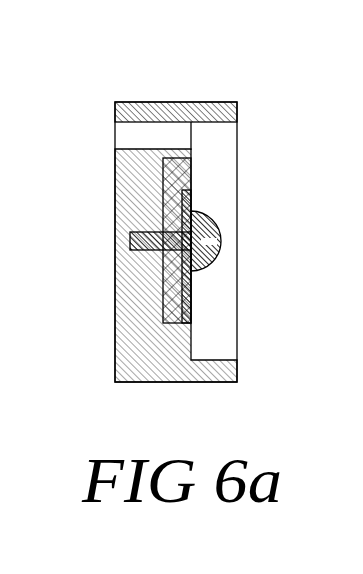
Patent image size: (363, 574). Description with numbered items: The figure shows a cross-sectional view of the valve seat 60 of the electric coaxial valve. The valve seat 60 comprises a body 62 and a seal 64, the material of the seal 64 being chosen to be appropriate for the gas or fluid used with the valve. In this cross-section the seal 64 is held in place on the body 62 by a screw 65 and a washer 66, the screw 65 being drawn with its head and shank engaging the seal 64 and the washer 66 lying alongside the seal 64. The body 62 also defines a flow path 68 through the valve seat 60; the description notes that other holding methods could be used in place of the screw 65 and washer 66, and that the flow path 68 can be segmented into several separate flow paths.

The valve seat 60 is at (177, 102).
The body 62 is at (150, 338).
The seal 64 is at (167, 178).
The screw 65 is at (218, 230).
The washer 66 is at (192, 280).
The flow path 68 is at (137, 135).